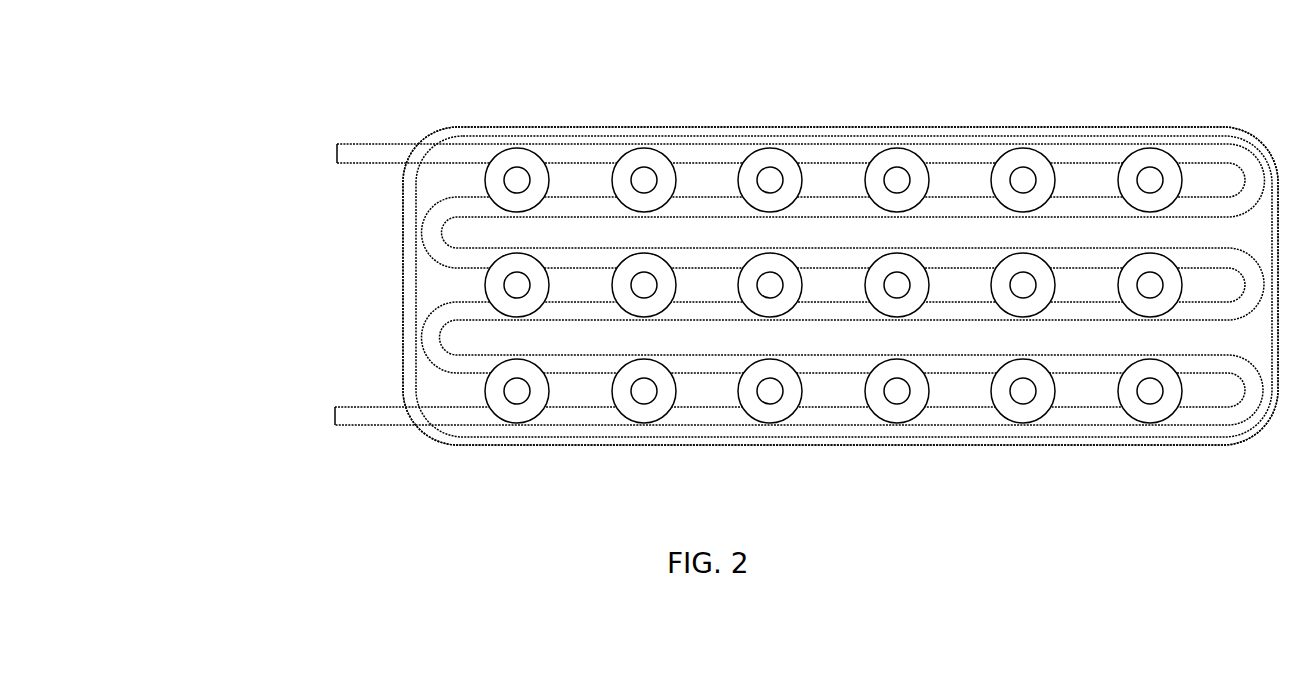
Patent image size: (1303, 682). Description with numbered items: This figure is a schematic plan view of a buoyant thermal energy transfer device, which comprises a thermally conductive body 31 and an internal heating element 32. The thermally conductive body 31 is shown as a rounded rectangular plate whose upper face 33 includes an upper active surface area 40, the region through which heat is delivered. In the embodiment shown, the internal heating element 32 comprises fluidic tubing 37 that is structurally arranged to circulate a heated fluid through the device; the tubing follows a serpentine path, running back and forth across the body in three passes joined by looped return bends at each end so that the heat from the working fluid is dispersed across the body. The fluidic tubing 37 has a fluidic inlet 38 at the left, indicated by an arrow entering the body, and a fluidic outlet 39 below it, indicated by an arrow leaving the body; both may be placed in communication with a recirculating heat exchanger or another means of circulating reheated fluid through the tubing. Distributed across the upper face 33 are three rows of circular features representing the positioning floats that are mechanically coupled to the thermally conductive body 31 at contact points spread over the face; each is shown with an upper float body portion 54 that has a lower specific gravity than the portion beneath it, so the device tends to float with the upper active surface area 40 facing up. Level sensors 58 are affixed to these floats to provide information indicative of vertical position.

The thermally conductive body 31 is at (655, 127).
The internal heating element 32 is at (480, 137).
The upper face 33 is at (456, 192).
The fluidic tubing 37 is at (560, 145).
The fluidic inlet 38 is at (313, 154).
The fluidic outlet 39 is at (335, 416).
The upper active surface area 40 is at (820, 127).
The upper float body portion 54 is at (484, 392).
The level sensor 58 is at (484, 285).